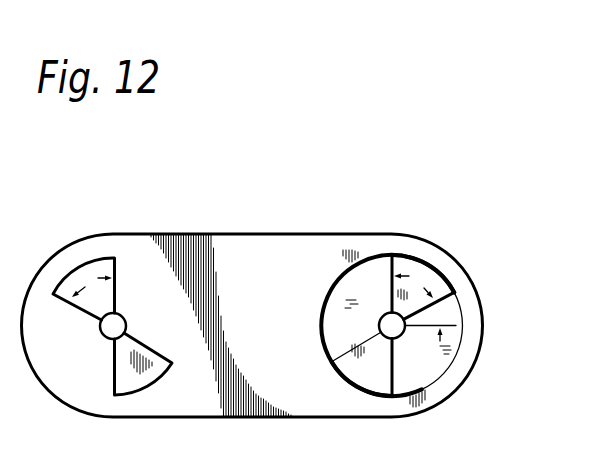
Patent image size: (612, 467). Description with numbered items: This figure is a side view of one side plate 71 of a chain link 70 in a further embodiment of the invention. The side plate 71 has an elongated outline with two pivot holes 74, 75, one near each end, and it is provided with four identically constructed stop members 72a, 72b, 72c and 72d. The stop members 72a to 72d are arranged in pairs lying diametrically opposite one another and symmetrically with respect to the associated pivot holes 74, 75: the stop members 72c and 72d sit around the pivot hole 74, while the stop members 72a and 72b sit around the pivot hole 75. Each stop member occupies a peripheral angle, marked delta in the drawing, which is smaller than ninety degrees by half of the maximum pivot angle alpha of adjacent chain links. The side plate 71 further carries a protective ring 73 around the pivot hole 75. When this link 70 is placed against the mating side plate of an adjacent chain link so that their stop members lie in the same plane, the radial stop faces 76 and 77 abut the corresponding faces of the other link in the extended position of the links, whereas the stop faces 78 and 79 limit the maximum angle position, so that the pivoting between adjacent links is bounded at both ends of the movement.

The link 70 is at (219, 232).
The side plate 71 is at (229, 284).
The stop member 72a is at (413, 258).
The stop member 72b is at (378, 380).
The stop member 72c is at (73, 272).
The stop member 72d is at (133, 370).
The protective ring 73 is at (472, 335).
The pivot hole 74 is at (110, 336).
The pivot hole 75 is at (398, 333).
The stop face 76 is at (390, 280).
The stop face 77 is at (400, 378).
The stop face 78 is at (343, 346).
The stop face 79 is at (452, 292).